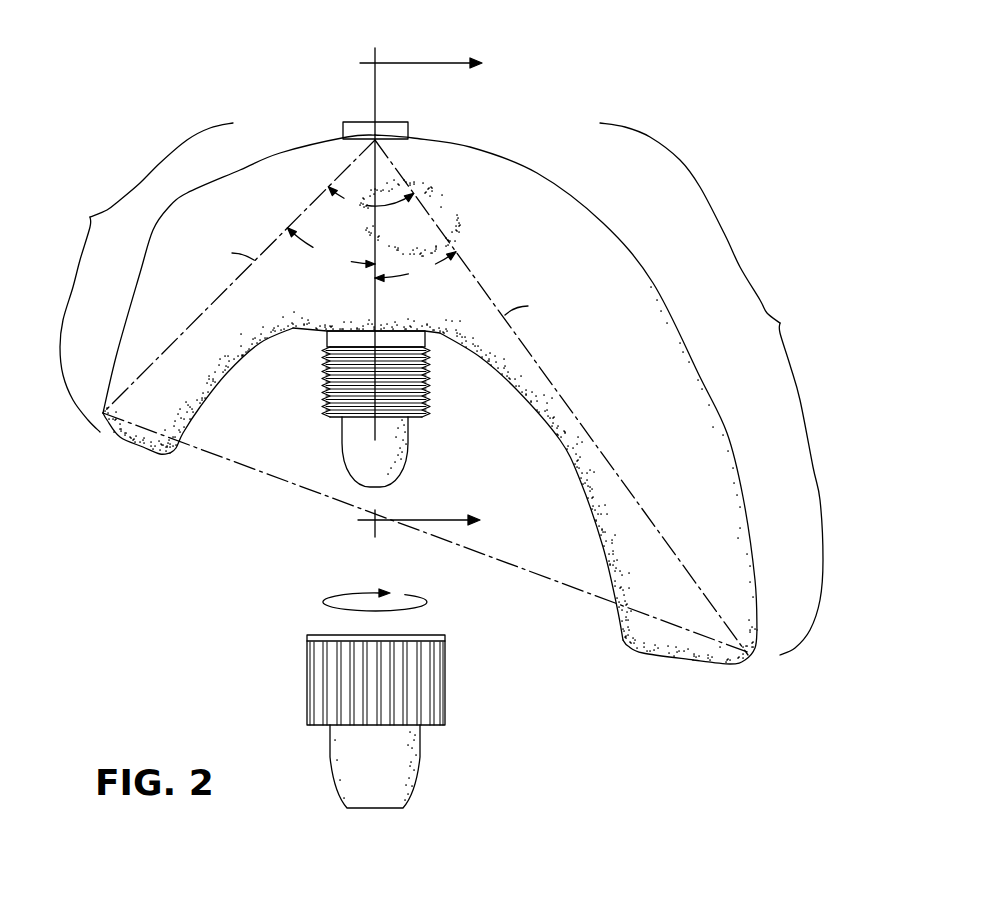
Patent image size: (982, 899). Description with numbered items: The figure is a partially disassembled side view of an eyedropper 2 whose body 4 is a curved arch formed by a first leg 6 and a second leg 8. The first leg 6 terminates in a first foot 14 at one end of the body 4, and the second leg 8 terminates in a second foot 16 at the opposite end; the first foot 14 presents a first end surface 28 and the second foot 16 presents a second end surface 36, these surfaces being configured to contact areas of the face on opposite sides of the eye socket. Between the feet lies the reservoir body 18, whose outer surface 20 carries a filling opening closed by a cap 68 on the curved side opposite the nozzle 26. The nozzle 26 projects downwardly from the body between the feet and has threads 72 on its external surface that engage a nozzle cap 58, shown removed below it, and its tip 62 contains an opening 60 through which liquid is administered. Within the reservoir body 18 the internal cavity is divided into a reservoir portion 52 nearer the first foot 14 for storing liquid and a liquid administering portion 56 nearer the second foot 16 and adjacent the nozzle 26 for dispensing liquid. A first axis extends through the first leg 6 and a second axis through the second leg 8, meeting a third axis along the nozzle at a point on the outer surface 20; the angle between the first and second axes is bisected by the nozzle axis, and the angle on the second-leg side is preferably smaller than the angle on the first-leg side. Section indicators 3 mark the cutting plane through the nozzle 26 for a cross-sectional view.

The eyedropper 2 is at (232, 102).
The section line 3- 3 is at (420, 278).
The body 4 is at (203, 184).
The first leg 6 is at (711, 389).
The second leg 8 is at (146, 277).
The first foot 14 is at (663, 651).
The second foot 16 is at (127, 443).
The reservoir body 18 is at (602, 224).
The outer surface 20 is at (493, 195).
The nozzle 26 is at (420, 438).
The first end surface 28 is at (703, 665).
The second end surface 36 is at (140, 458).
The reservoir portion 52 is at (597, 474).
The liquid administering portion 56 is at (369, 316).
The nozzle cap 58 is at (306, 683).
The opening 60 is at (372, 487).
The tip 62 is at (342, 450).
The cap 68 is at (363, 121).
The threads 72 is at (323, 381).